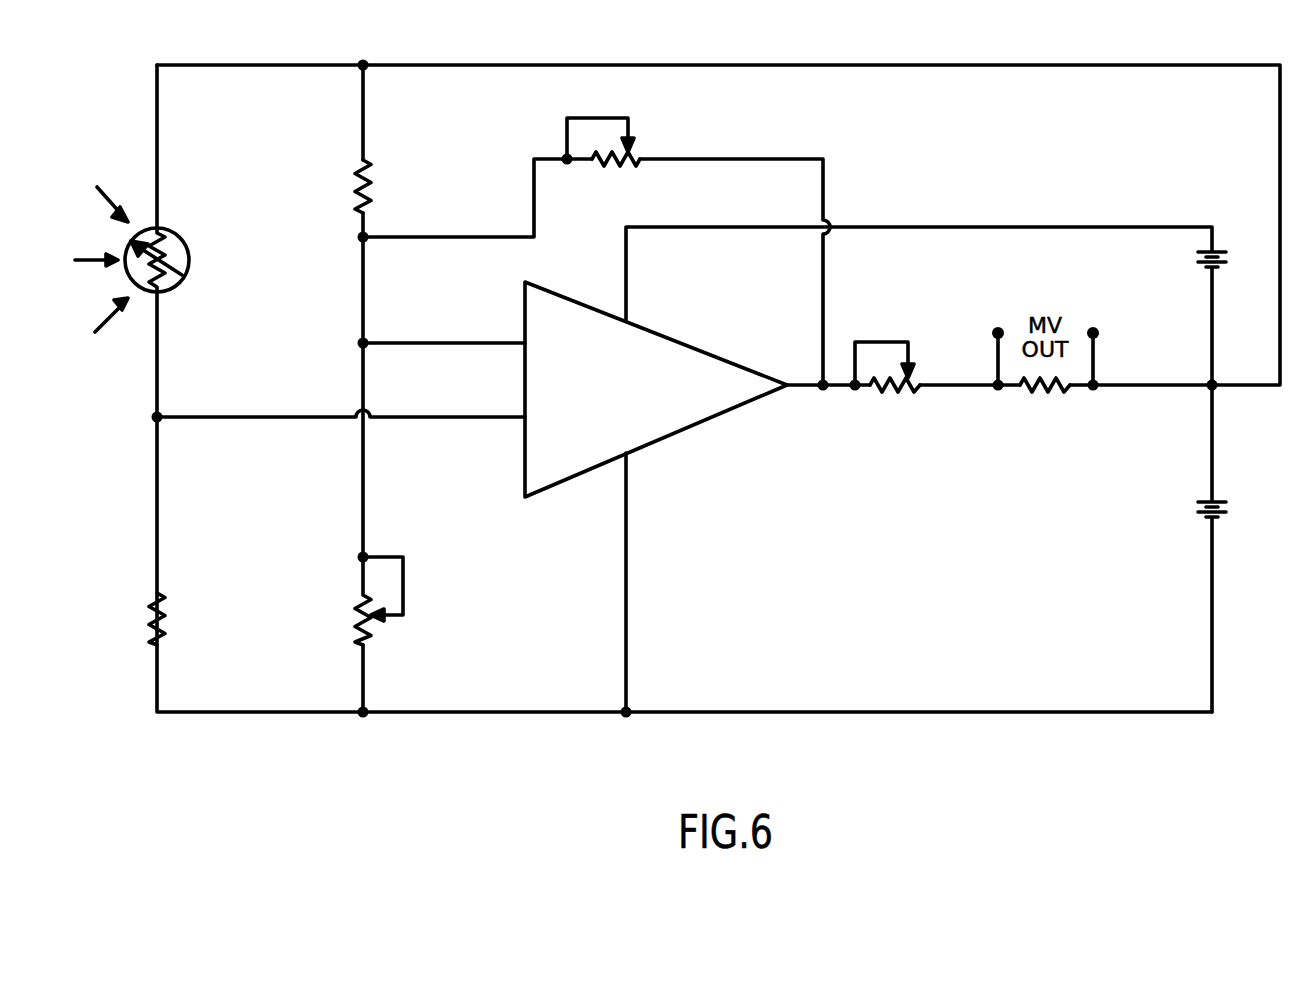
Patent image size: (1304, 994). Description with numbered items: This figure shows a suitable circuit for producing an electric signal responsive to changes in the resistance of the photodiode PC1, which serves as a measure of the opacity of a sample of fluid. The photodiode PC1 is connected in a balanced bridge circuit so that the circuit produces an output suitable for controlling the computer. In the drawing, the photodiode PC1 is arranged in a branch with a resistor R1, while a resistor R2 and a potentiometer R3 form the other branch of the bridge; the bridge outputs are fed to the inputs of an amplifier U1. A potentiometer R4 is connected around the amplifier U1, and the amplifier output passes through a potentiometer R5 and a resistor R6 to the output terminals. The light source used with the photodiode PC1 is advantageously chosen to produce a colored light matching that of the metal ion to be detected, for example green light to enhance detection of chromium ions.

The photodiode PC1 is at (159, 259).
The resistor R1 is at (175, 619).
The resistor R2 is at (380, 186).
The zero adjustment potentiometer R3 is at (413, 601).
The span adjustment potentiometer R4 is at (603, 140).
The sensitivity potentiometer R5 is at (889, 368).
The output resistor R6 is at (1045, 400).
The operational amplifier U1 is at (656, 389).